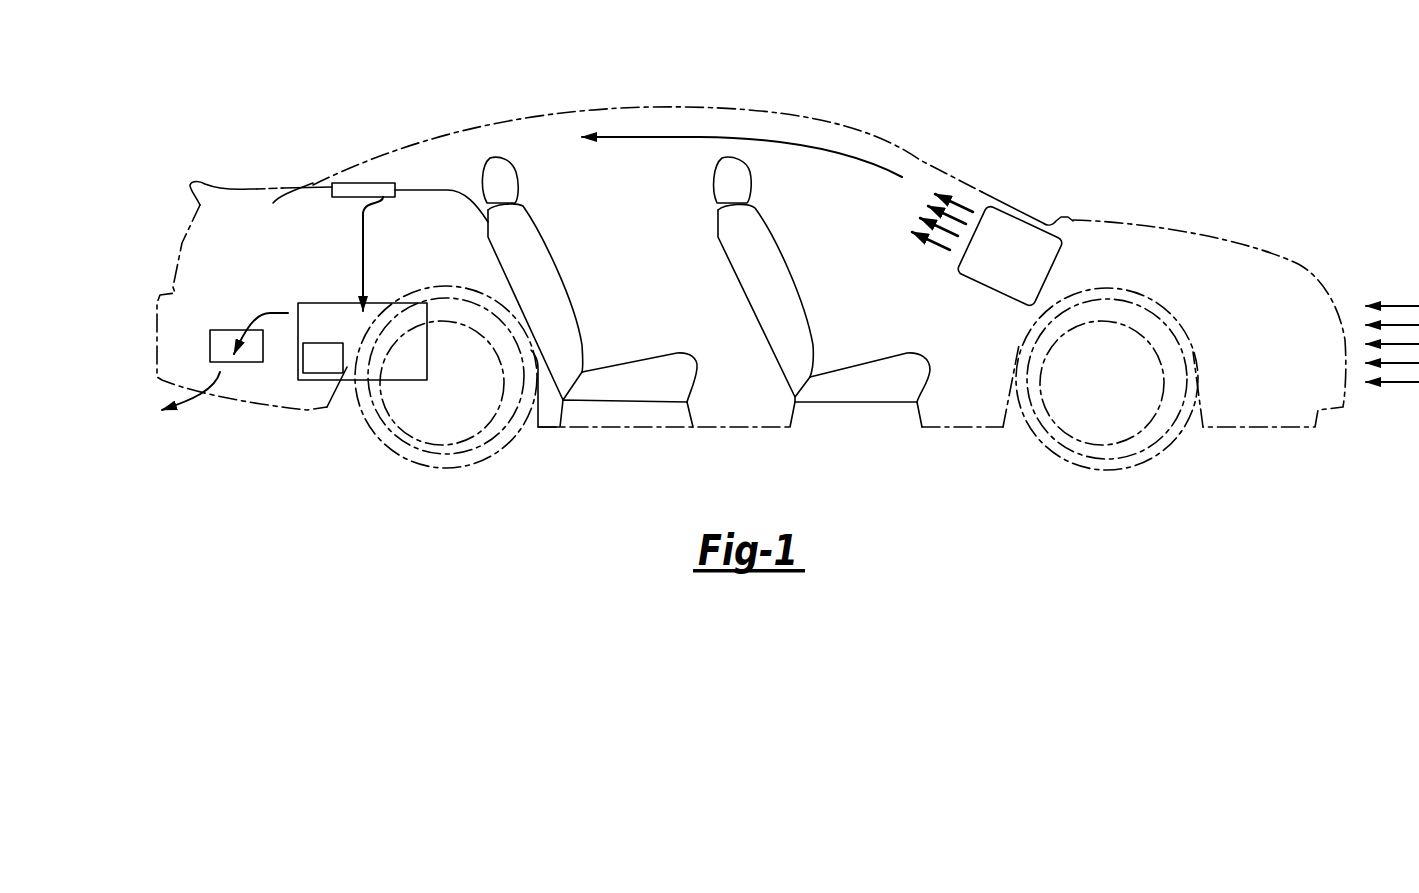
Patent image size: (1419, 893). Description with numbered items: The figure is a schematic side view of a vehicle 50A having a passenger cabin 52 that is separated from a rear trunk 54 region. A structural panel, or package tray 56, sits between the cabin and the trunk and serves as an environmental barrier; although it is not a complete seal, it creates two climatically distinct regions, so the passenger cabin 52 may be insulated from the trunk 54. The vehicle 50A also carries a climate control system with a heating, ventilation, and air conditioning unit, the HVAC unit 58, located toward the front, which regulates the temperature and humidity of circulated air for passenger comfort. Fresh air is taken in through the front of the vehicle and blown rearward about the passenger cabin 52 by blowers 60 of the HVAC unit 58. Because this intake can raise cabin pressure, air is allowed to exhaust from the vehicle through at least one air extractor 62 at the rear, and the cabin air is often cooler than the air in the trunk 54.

The vehicle 50A is at (924, 131).
The passenger cabin 52 is at (674, 168).
The trunk 54 is at (208, 263).
The package tray 56 is at (313, 183).
The HVAC unit 58 is at (1025, 270).
The blowers 60 is at (982, 210).
The air extractor 62 is at (210, 344).